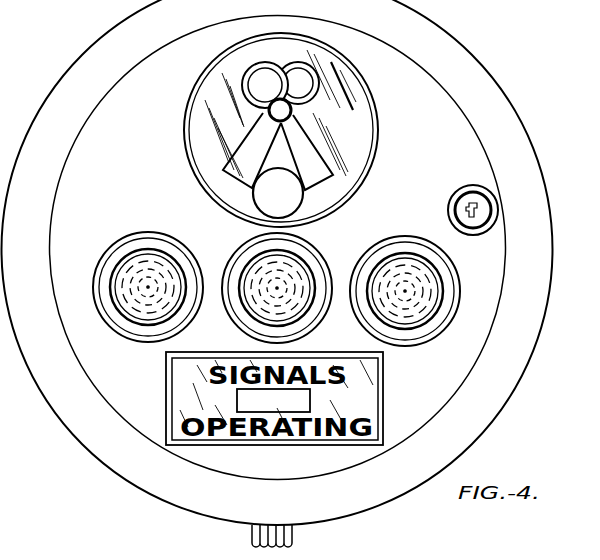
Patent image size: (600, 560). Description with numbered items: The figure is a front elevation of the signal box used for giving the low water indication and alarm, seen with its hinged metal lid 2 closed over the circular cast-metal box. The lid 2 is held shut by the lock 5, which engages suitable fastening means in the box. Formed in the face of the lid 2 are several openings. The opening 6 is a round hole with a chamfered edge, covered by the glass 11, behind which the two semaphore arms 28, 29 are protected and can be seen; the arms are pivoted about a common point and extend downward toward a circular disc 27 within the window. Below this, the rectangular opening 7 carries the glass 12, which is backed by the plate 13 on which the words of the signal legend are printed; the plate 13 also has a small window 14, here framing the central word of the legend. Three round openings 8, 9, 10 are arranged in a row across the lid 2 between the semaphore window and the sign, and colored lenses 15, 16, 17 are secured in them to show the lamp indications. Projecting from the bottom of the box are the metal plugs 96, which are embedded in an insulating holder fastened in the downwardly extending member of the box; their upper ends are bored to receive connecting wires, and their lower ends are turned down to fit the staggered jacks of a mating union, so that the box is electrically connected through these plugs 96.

The lid 2 is at (277, 262).
The lock 5 is at (458, 194).
The opening 6 is at (375, 105).
The rectangular opening 7 is at (383, 388).
The round opening 8 is at (188, 254).
The round opening 9 is at (318, 258).
The round opening 10 is at (449, 276).
The glass 11 is at (339, 165).
The glass 12 is at (276, 394).
The plate 13 is at (275, 399).
The small window 14 is at (282, 401).
The colored lens 15 is at (148, 287).
The colored lens 16 is at (277, 288).
The colored lens 17 is at (405, 291).
The indicator disc 27 is at (278, 158).
The semaphore arm 28 is at (252, 150).
The semaphore arm 29 is at (307, 152).
The plugs 96 is at (252, 543).